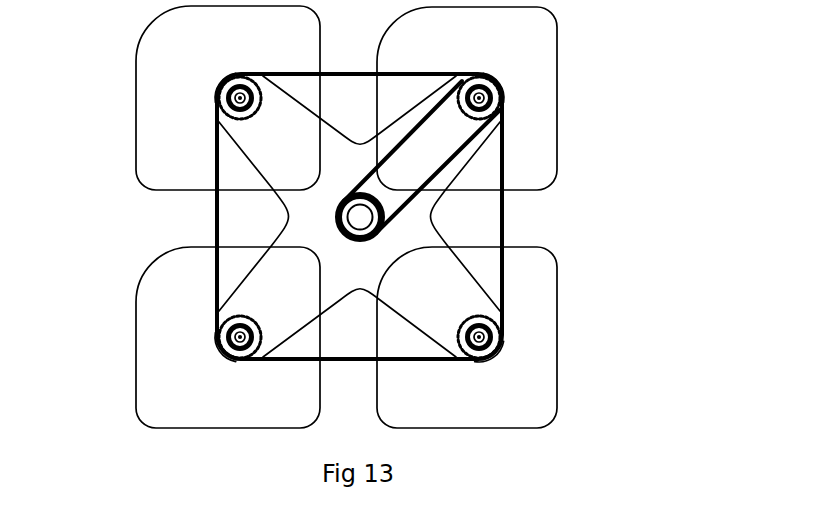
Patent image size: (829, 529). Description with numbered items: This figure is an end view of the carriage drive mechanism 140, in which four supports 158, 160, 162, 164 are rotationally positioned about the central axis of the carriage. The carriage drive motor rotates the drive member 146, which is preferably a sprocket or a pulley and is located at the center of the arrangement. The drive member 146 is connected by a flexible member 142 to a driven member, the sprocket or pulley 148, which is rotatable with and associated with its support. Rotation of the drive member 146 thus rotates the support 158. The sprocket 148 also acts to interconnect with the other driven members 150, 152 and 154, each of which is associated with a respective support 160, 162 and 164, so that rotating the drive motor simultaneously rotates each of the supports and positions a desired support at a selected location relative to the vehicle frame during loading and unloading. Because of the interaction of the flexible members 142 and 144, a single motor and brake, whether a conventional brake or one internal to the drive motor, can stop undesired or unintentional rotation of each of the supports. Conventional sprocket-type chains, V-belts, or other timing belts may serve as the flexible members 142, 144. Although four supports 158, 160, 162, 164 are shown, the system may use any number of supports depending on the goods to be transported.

The drive assembly 140 is at (535, 209).
The flexible member 142 is at (470, 138).
The flexible member 144 is at (503, 275).
The drive member 146 is at (337, 213).
The sprocket 148 is at (497, 103).
The driven member 150 is at (500, 327).
The driven member 152 is at (213, 323).
The driven member 154 is at (213, 100).
The support 158 is at (532, 29).
The support 160 is at (532, 398).
The support 162 is at (175, 377).
The support 164 is at (180, 58).